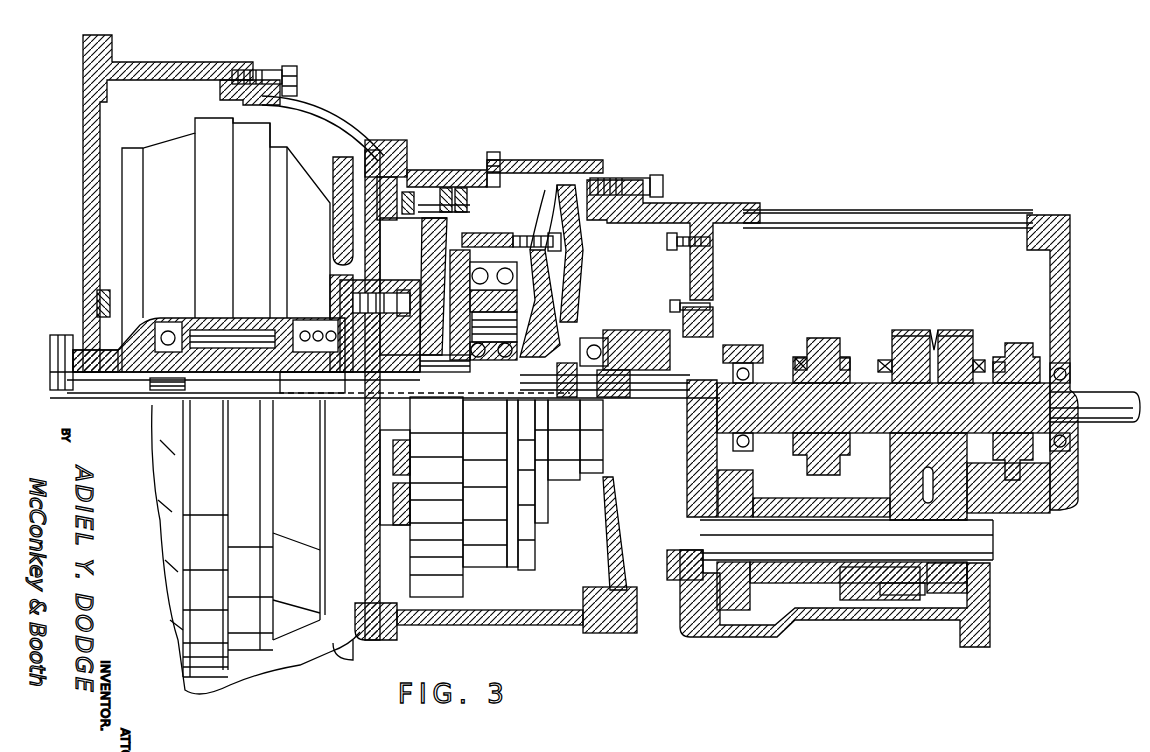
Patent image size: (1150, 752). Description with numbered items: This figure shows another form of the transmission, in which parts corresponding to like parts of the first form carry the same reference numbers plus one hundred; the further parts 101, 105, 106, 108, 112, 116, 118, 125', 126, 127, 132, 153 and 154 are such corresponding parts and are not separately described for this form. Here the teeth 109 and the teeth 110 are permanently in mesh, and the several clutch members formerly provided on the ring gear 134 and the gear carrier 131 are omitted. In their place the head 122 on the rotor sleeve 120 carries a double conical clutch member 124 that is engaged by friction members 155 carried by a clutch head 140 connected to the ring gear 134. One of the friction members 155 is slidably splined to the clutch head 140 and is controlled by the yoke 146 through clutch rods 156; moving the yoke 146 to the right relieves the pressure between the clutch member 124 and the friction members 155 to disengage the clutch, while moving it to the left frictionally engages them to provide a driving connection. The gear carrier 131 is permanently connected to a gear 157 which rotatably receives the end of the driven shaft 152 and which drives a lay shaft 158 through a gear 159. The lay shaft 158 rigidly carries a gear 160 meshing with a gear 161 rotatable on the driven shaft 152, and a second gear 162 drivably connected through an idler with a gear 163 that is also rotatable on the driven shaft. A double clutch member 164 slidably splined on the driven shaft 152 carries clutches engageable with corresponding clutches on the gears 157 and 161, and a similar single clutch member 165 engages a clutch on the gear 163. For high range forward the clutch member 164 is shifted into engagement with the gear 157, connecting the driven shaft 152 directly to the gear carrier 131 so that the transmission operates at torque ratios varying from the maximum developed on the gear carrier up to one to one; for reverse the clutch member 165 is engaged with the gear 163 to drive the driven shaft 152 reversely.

The input shaft 101 is at (57, 345).
The hub 105 is at (250, 318).
The bearing 106 is at (235, 355).
The flange 108 is at (125, 375).
The teeth 109 is at (264, 356).
The teeth 110 is at (163, 400).
The ring 112 is at (322, 378).
The housing cover 116 is at (300, 150).
The ring gear 118 is at (472, 395).
The rotor sleeve 120 is at (234, 350).
The head 122 is at (395, 368).
The double conical clutch member 124 is at (420, 228).
The hub 125' is at (418, 477).
The bearing 126 is at (405, 525).
The sleeve 127 is at (410, 505).
The gear carrier 131 is at (440, 366).
The bearing 132 is at (507, 280).
The ring gear 134 is at (467, 240).
The clutch head 140 is at (456, 195).
The yoke 146 is at (562, 292).
The driven shaft 152 is at (1096, 400).
The bearing 153 is at (624, 346).
The hub 154 is at (620, 330).
The friction members 155 is at (408, 204).
The clutch rods 156 is at (492, 238).
The gear 157 is at (746, 345).
The lay shaft 158 is at (842, 575).
The gear 159 is at (750, 588).
The gear 160 is at (900, 590).
The gear 161 is at (905, 335).
The second gear 162 is at (950, 583).
The gear 163 is at (955, 345).
The double clutch member 164 is at (830, 345).
The single clutch member 165 is at (1010, 362).